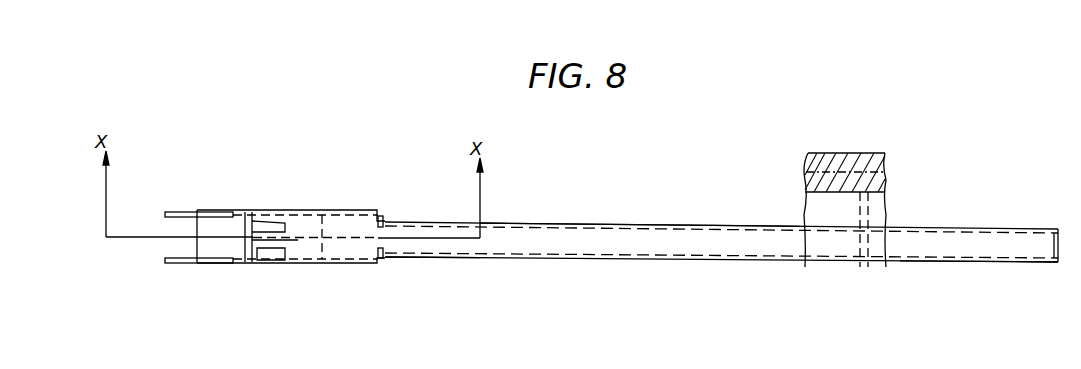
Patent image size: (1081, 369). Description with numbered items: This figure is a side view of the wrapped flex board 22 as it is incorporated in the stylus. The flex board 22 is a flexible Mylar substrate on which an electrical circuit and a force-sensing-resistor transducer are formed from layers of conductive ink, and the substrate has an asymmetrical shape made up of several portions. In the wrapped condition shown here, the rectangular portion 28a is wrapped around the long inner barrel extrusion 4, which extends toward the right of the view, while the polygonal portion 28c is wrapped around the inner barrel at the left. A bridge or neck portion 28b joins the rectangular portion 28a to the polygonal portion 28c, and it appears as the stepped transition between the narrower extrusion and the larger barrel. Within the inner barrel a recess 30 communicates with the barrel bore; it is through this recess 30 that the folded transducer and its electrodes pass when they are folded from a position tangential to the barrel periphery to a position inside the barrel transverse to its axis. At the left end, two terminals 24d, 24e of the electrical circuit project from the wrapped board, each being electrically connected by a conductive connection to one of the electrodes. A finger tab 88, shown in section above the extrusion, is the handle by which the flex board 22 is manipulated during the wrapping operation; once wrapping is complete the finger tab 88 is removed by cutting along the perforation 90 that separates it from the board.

The inner barrel extrusion 4 is at (970, 266).
The flex board 22 is at (402, 221).
The terminal 24d is at (176, 210).
The terminal 24e is at (180, 263).
The rectangular portion 28a is at (713, 222).
The bridge or neck portion 28b is at (385, 242).
The polygonal portion 28c is at (310, 209).
The recess 30 is at (265, 245).
The finger tab 88 is at (855, 152).
The perforation 90 is at (877, 194).